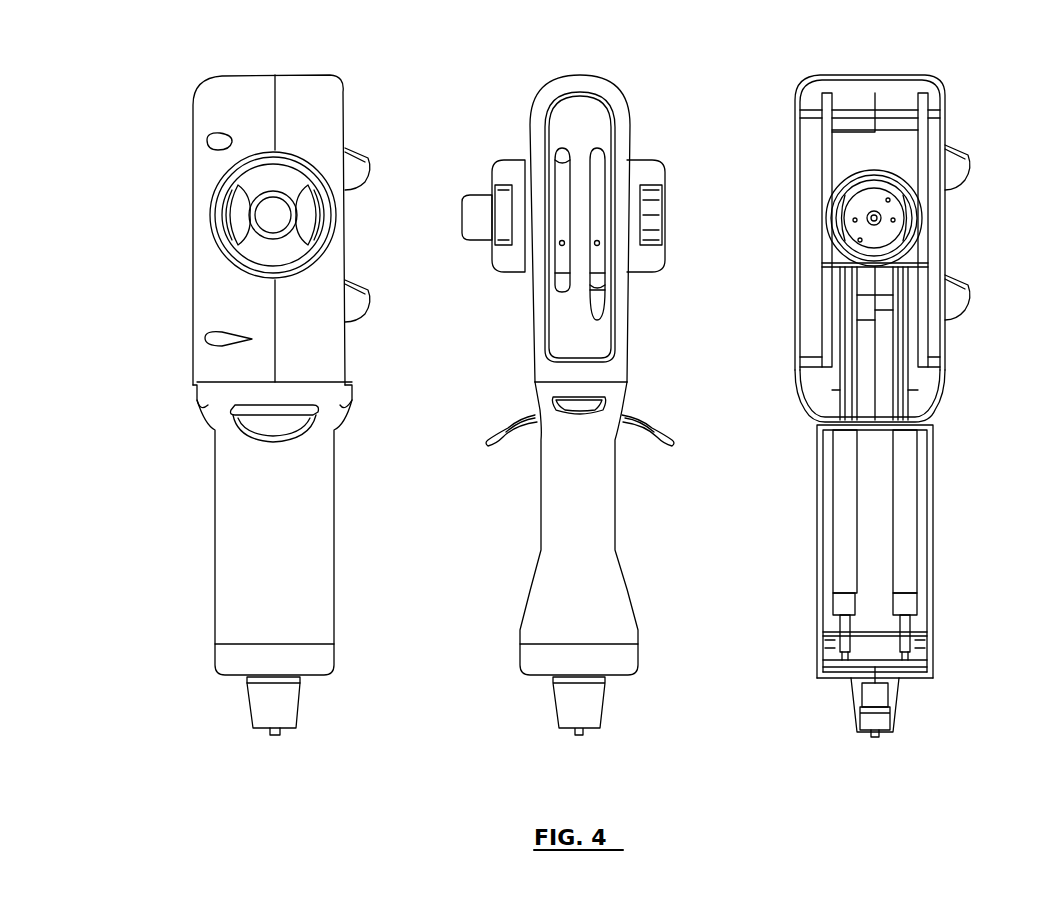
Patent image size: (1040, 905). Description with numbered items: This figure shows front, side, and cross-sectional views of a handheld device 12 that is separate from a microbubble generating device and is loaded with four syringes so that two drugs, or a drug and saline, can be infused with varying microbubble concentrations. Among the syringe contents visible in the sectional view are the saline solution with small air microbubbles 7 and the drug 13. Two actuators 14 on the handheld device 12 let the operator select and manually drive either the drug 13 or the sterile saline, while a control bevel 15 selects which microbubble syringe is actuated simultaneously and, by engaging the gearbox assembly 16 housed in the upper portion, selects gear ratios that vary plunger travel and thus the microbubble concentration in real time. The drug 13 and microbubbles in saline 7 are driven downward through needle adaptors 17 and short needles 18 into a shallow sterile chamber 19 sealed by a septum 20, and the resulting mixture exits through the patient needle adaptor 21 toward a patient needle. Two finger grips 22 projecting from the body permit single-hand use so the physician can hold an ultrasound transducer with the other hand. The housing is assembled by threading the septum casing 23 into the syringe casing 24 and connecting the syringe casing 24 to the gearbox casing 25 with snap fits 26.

The saline solution with small air microbubbles 7 is at (840, 520).
The handheld device 12 is at (195, 230).
The drug 13 is at (906, 515).
The actuators 14 is at (358, 295).
The control bevel 15 is at (672, 210).
The gearbox assembly 16 is at (870, 177).
The needle adaptors 17 is at (900, 603).
The short needles 18 is at (850, 640).
The sterile chamber 19 is at (864, 672).
The septum 20 is at (893, 673).
The patient needle adaptor 21 is at (870, 720).
The finger grips 22 is at (655, 437).
The septum casing 23 is at (268, 660).
The syringe casing 24 is at (270, 530).
The gearbox casing 25 is at (230, 297).
The snap fits 26 is at (577, 397).